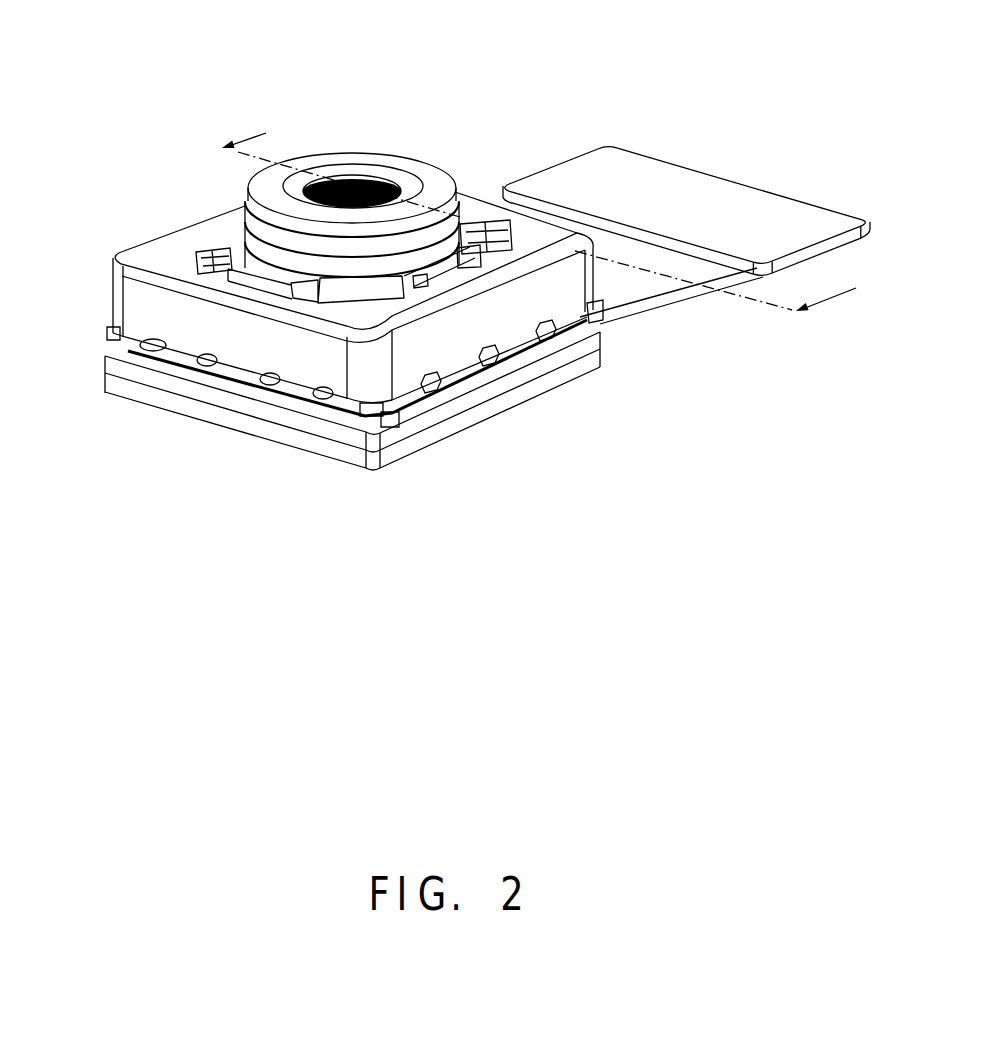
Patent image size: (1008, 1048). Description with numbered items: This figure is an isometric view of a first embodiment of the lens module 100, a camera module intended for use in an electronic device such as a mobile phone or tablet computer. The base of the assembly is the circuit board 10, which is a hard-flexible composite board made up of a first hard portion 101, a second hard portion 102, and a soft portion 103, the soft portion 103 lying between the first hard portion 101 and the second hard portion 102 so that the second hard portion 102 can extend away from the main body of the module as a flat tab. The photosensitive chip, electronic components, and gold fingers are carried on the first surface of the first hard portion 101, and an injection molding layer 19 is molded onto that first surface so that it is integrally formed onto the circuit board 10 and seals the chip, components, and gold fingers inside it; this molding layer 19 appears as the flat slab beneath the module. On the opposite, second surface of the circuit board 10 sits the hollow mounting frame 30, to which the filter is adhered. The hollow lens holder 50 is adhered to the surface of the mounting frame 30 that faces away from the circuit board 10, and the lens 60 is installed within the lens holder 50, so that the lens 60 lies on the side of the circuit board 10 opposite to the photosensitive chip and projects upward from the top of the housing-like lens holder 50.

The lens module 100 is at (448, 48).
The circuit board 10 is at (794, 358).
The first hard portion 101 is at (560, 363).
The second hard portion 102 is at (742, 238).
The soft portion 103 is at (632, 298).
The injection molding layer 19 is at (413, 442).
The mounting frame 30 is at (463, 390).
The lens holder 50 is at (133, 298).
The lens 60 is at (256, 196).